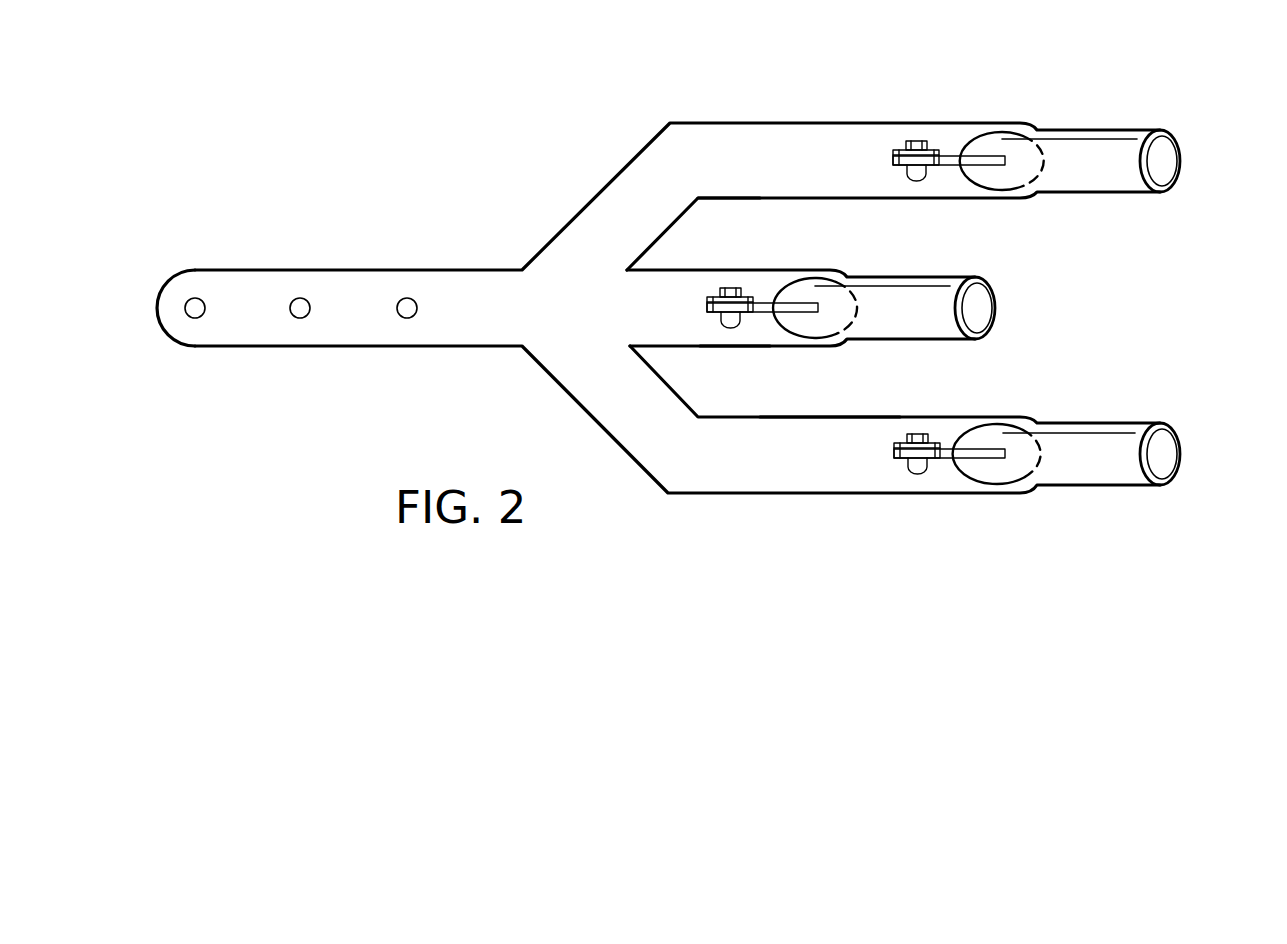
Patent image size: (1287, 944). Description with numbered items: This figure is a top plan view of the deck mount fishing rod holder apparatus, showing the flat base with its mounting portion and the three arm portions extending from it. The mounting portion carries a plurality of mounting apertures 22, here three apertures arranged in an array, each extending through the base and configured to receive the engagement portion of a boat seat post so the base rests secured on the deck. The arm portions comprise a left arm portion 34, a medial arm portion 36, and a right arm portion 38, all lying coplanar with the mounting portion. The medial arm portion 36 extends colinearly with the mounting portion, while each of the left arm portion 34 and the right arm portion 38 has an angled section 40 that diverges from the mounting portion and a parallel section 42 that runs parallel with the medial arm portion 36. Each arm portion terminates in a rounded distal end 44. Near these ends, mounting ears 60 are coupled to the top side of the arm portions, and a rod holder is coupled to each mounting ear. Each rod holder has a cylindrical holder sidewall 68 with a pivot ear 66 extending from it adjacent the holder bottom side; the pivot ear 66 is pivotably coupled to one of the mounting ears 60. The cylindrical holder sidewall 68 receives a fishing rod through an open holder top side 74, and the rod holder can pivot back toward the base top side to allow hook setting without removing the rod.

The mounting apertures 22 is at (407, 318).
The left arm portion 34 is at (700, 200).
The medial arm portion 36 is at (718, 348).
The right arm portion 38 is at (827, 417).
The angled section 40 is at (520, 257).
The parallel section 42 is at (1033, 112).
The rounded distal end 44 is at (1023, 199).
The mounting ears 60 is at (938, 442).
The pivot ear 66 is at (960, 456).
The cylindrical holder sidewall 68 is at (1080, 445).
The open holder top side 74 is at (1160, 452).